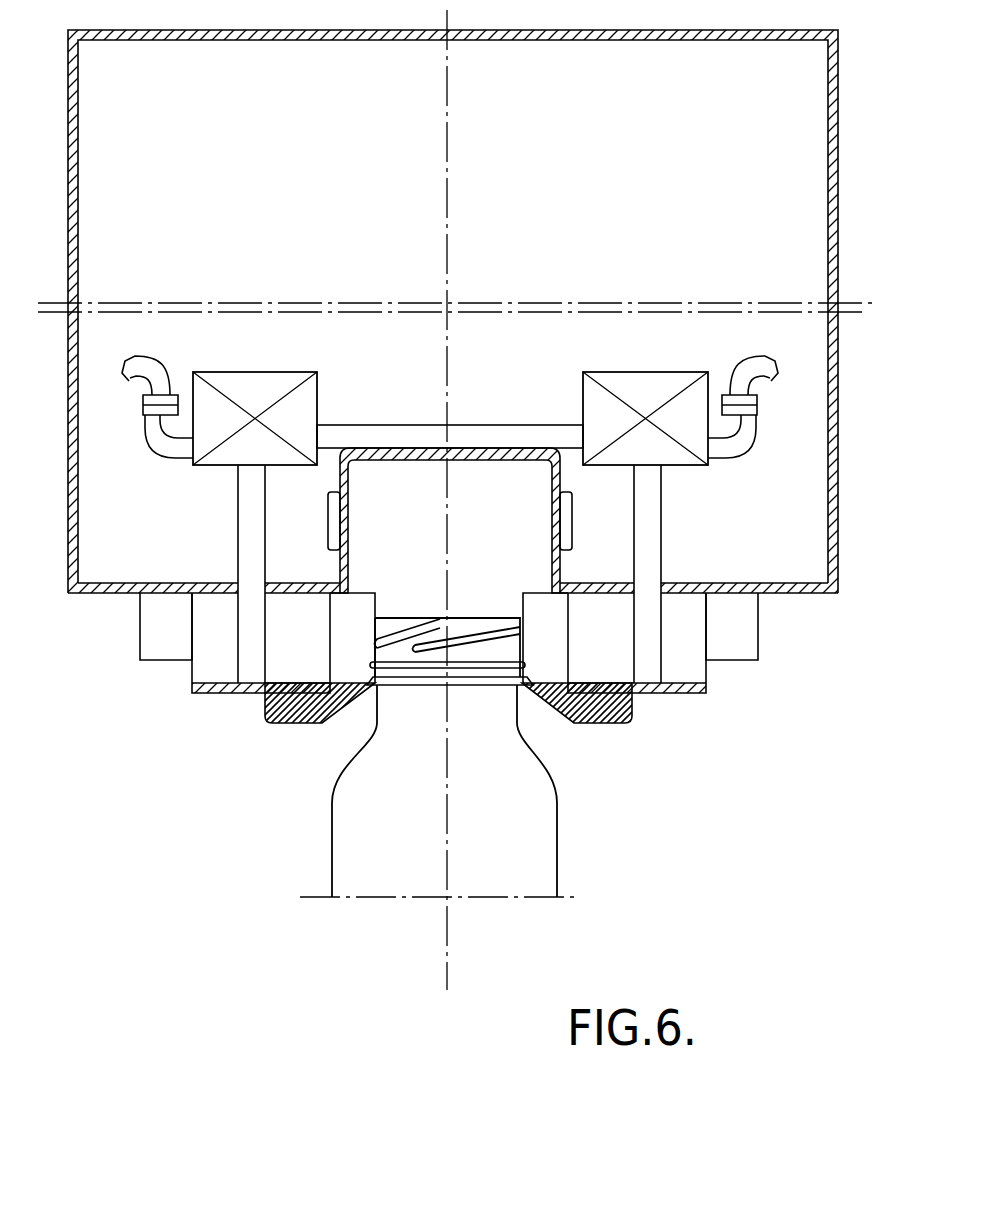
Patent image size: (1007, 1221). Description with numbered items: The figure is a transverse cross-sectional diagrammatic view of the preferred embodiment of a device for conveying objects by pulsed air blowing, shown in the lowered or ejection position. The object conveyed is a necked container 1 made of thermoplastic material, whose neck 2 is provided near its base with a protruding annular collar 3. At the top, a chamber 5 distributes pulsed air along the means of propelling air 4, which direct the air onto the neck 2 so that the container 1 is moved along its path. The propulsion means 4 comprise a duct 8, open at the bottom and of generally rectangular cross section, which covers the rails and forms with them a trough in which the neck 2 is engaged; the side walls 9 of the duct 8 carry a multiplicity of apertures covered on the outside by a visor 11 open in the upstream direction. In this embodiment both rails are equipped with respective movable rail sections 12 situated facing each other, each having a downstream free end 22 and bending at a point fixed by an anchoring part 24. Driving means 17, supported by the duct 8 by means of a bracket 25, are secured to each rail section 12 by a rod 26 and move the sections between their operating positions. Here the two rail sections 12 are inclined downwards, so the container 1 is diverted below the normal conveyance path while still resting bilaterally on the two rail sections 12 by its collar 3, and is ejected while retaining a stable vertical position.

The container 1 is at (328, 832).
The neck 2 is at (480, 628).
The annular collar 3 is at (467, 687).
The means of propelling air 4 is at (494, 418).
The chamber 5 is at (615, 191).
The duct 8 is at (569, 483).
The side walls 9 is at (340, 480).
The visor 11 is at (330, 541).
The movable rail section 12 is at (227, 664).
The driving means 17 is at (275, 385).
The free end 22 is at (290, 724).
The anchoring part 24 is at (168, 625).
The bracket 25 is at (403, 440).
The rod 26 is at (252, 520).